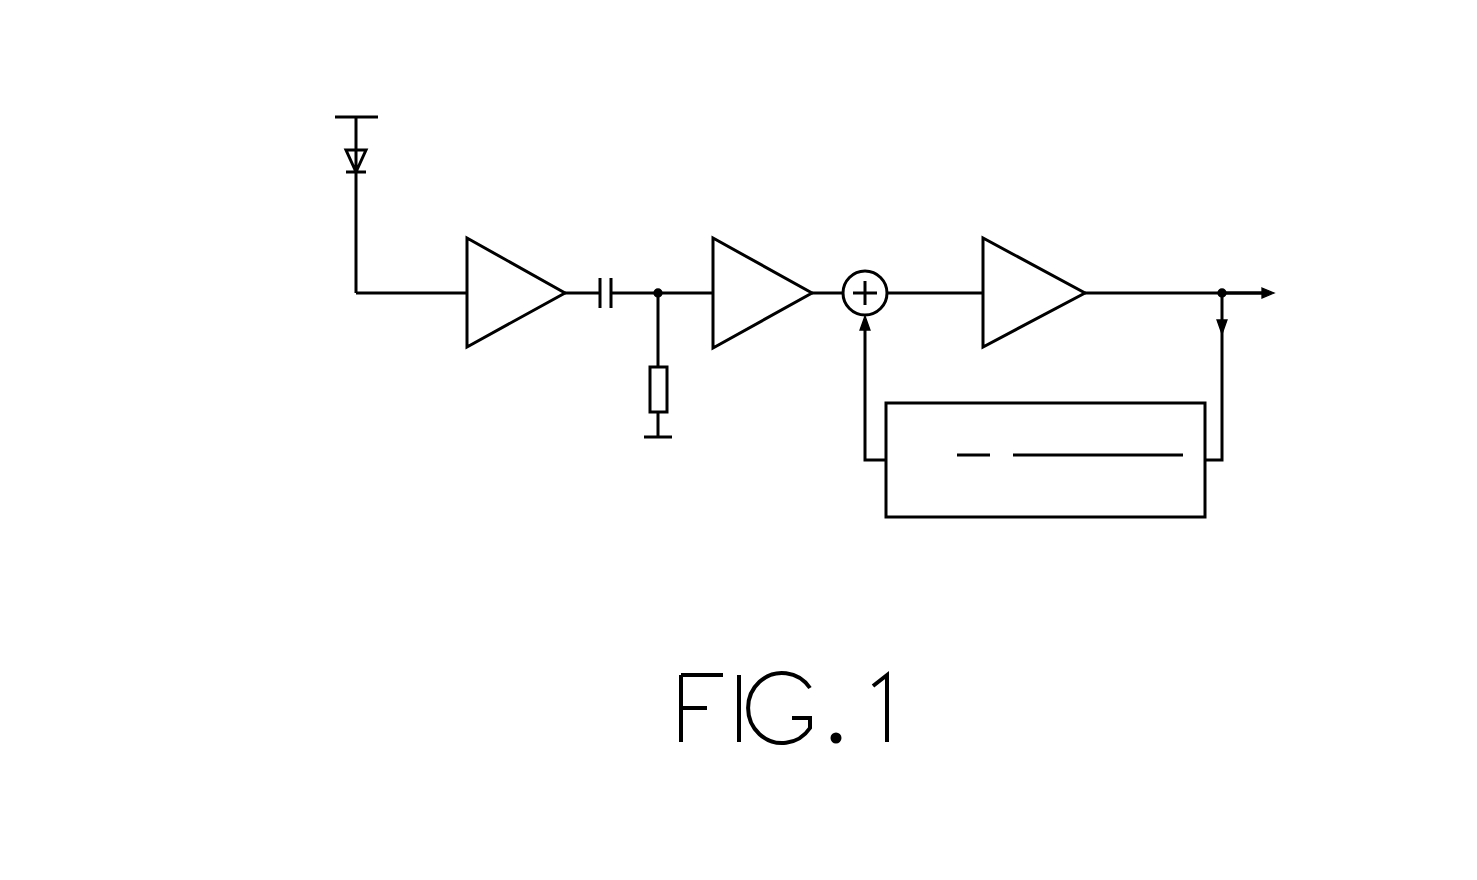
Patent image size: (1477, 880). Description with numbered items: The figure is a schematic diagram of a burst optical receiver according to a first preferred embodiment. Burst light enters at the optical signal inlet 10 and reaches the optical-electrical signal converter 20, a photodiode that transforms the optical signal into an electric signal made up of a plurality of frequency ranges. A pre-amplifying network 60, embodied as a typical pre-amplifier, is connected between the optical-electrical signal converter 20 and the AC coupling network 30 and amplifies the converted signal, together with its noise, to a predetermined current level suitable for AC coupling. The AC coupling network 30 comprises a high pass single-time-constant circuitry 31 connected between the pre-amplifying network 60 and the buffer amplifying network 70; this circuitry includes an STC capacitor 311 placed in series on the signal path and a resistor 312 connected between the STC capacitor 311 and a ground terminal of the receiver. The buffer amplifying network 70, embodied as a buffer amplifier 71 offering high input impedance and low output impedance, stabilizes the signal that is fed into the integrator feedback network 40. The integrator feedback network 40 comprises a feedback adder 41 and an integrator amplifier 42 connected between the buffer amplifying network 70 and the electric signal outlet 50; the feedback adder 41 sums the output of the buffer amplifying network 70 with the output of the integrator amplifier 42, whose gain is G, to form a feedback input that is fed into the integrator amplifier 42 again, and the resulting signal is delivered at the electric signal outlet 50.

The optical signal inlet 10 is at (262, 86).
The optical-electrical signal converter 20 is at (390, 146).
The AC coupling network 30 is at (555, 410).
The high pass single-time-constant circuitry 31 is at (657, 196).
The STC capacitor 311 is at (597, 282).
The resistor 312 is at (650, 400).
The integrator feedback network 40 is at (1085, 166).
The feedback adder 41 is at (870, 270).
The integrator amplifier 42 is at (1022, 278).
The electric signal outlet 50 is at (1281, 286).
The pre-amplifying network 60 is at (405, 346).
The buffer amplifying network 70 is at (761, 376).
The buffer amplifier 71 is at (752, 288).